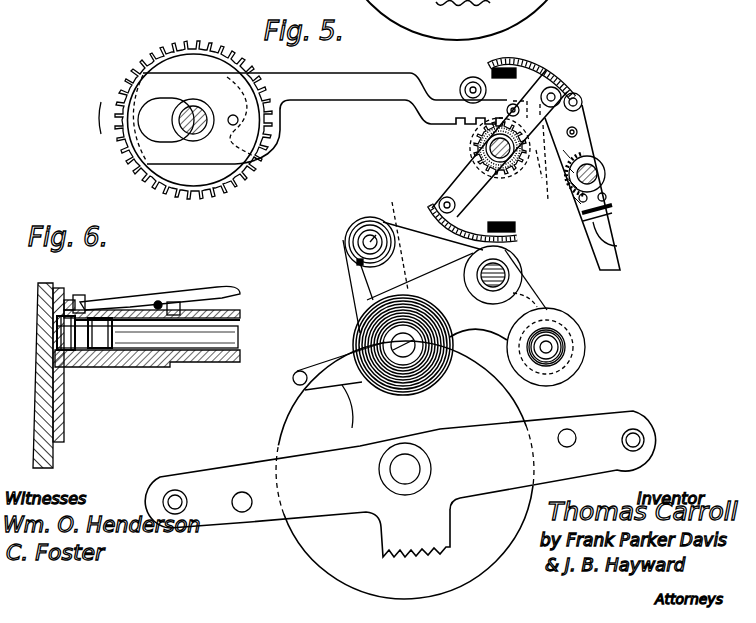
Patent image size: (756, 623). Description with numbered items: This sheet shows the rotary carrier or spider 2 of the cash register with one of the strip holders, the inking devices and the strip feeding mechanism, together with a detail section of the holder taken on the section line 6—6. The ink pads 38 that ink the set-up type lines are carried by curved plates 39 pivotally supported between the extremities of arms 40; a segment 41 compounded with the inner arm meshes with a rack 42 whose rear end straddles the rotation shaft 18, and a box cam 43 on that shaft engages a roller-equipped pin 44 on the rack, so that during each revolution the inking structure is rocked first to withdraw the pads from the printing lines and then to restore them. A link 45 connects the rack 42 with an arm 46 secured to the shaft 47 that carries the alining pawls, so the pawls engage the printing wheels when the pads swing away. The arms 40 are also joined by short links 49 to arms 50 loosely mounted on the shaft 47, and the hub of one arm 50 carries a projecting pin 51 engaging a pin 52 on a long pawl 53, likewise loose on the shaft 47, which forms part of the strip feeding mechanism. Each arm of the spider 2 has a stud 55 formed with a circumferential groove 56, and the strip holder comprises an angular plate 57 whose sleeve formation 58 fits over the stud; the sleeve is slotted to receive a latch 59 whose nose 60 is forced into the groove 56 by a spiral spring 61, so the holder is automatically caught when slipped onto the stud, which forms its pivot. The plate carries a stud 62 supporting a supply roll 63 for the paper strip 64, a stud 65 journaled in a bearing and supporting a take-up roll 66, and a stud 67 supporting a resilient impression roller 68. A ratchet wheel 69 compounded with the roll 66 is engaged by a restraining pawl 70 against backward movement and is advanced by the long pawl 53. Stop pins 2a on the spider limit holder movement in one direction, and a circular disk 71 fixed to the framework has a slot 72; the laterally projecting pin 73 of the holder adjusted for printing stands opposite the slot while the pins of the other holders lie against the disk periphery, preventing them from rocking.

In FIG. 5, the rotary carrier or spider 2 is at (258, 466).
In FIG. 5, the stop pins 2a is at (226, 500).
In FIG. 5, the section line 6 is at (338, 300).
In FIG. 5, the rotation shaft 18 is at (180, 112).
In FIG. 5, the ink pads 38 is at (508, 222).
In FIG. 5, the curved plates 39 is at (538, 63).
In FIG. 5, the arms 40 is at (472, 211).
In FIG. 5, the segment 41 is at (460, 137).
In FIG. 5, the rack 42 is at (386, 86).
In FIG. 5, the box cam 43 is at (190, 72).
In FIG. 5, the roller-equipped pin 44 is at (238, 120).
In FIG. 5, the link 45 is at (581, 98).
In FIG. 5, the arm 46 is at (586, 128).
In FIG. 5, the shaft 47 is at (600, 174).
In FIG. 5, the short links 49 is at (541, 168).
In FIG. 5, the arms 50 is at (590, 148).
In FIG. 5, the projecting pin 51 is at (620, 247).
In FIG. 5, the pin 52 is at (616, 204).
In FIG. 5, the long pawl 53 is at (618, 224).
In FIG. 5, the stud 55 is at (368, 238).
In FIG. 6, the stud 55 is at (230, 339).
In FIG. 6, the circumferential groove 56 is at (80, 350).
In FIG. 5, the angular plate 57 is at (472, 318).
In FIG. 6, the angular plate 57 is at (56, 415).
In FIG. 6, the sleeve formation 58 is at (170, 367).
In FIG. 6, the latch 59 is at (188, 296).
In FIG. 6, the nose 60 is at (88, 306).
In FIG. 6, the spiral spring 61 is at (240, 300).
In FIG. 5, the stud 62 is at (398, 360).
In FIG. 5, the supply roll 63 is at (407, 356).
In FIG. 5, the paper strip 64 is at (352, 428).
In FIG. 5, the stud 65 is at (553, 347).
In FIG. 5, the take-up roll 66 is at (566, 356).
In FIG. 5, the stud 67 is at (506, 273).
In FIG. 5, the impression roller 68 is at (470, 284).
In FIG. 5, the ratchet wheel 69 is at (558, 378).
In FIG. 5, the restraining pawl 70 is at (543, 280).
In FIG. 5, the circular disk 71 is at (318, 553).
In FIG. 5, the slot 72 is at (333, 388).
In FIG. 5, the laterally projecting pin 73 is at (297, 383).